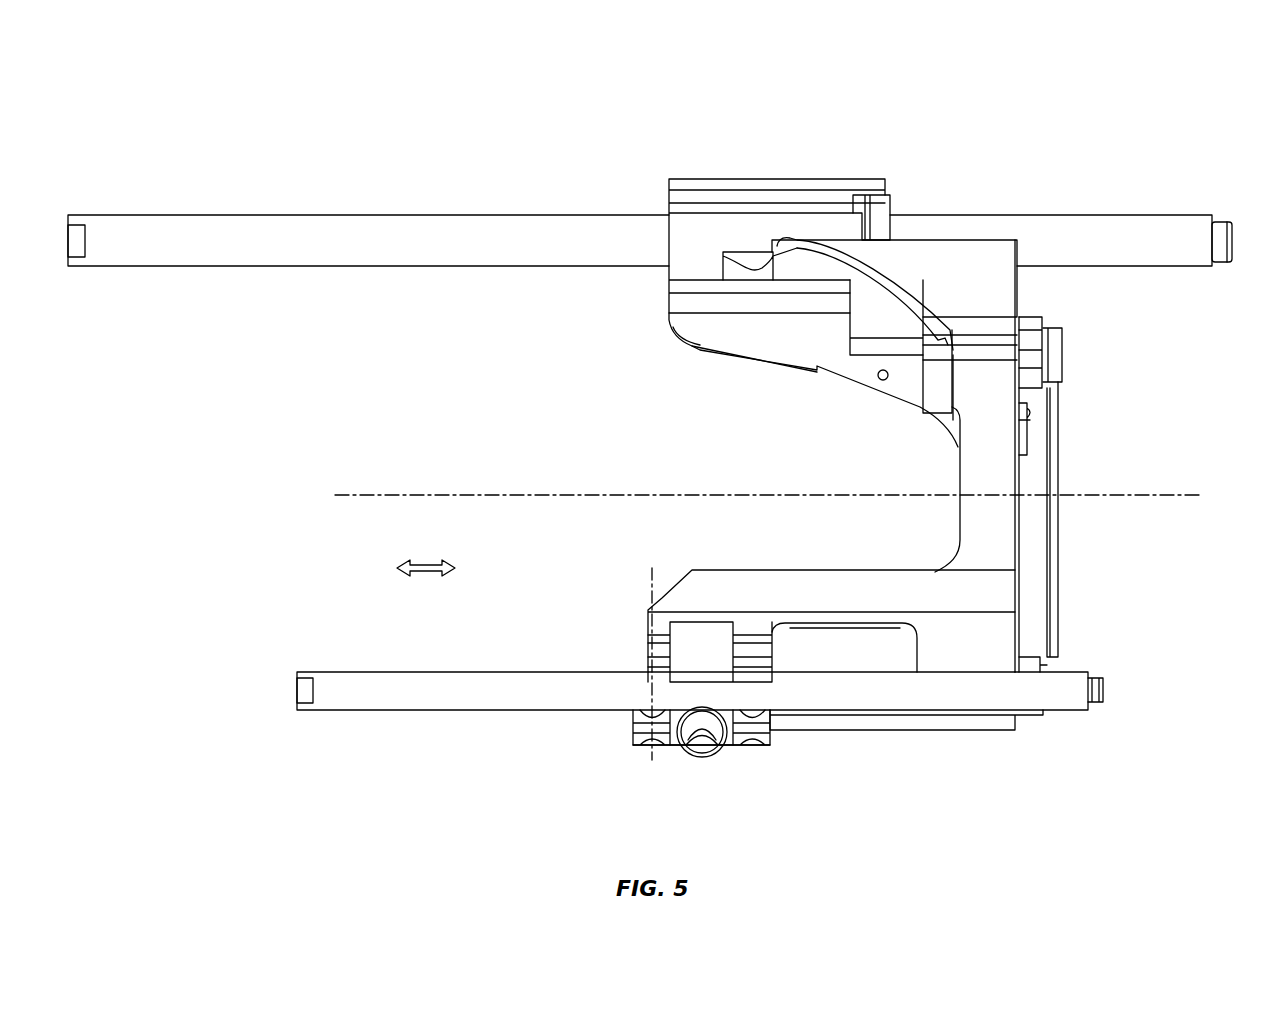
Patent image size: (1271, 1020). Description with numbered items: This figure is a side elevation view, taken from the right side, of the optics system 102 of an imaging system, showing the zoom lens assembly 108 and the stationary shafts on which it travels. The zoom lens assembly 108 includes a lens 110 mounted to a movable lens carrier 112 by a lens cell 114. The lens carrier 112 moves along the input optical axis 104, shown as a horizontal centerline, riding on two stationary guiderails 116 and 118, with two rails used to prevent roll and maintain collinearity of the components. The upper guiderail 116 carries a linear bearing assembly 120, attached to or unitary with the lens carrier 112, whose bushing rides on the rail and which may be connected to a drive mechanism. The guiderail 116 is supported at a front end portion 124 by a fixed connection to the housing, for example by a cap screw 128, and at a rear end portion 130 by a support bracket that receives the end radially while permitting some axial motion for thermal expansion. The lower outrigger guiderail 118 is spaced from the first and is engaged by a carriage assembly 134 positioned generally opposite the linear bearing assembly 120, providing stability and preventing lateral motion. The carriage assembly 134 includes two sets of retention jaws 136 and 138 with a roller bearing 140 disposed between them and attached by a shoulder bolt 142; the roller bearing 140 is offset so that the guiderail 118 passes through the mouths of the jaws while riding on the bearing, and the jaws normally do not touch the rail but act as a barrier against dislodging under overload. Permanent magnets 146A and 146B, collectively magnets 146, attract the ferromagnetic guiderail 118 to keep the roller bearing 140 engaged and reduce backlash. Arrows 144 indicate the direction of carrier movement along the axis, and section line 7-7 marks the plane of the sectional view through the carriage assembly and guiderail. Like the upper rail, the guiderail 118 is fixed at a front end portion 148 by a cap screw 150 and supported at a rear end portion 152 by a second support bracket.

The optics system 102 is at (320, 118).
The input optical axis 104 is at (583, 492).
The zoom lens assembly 108 is at (1105, 360).
The lens 110 is at (1095, 530).
The lens carrier 112 is at (820, 580).
The lens cell 114 is at (1040, 630).
The guiderail 116 is at (497, 228).
The guiderail 118 is at (478, 703).
The linear bearing assembly 120 is at (748, 163).
The front end portion 124 is at (1065, 185).
The cap screw 128 is at (1218, 225).
The rear end portion 130 is at (198, 330).
The carriage assembly 134 is at (715, 815).
The jaws 136 is at (790, 665).
The jaws 138 is at (630, 657).
The roller bearing 140 is at (720, 740).
The shoulder bolt 142 is at (698, 757).
The arrows 144 is at (455, 585).
The magnets 146 is at (770, 785).
The permanent magnet 146A is at (765, 730).
The permanent magnet 146B is at (640, 720).
The front end portion 148 is at (1052, 742).
The cap screw 150 is at (1095, 700).
The rear end portion 152 is at (370, 740).
The section line 7-7 is at (650, 585).